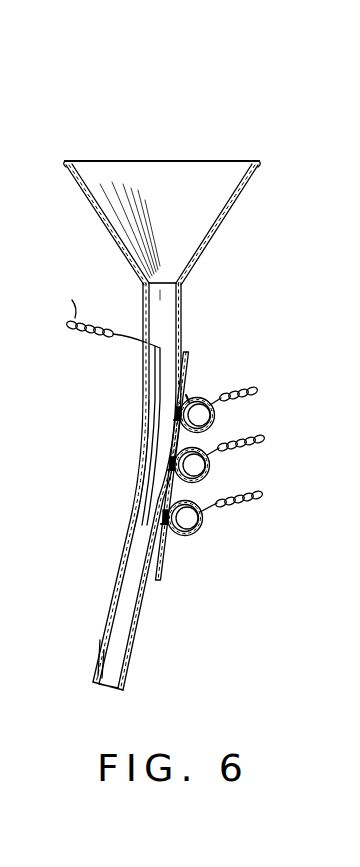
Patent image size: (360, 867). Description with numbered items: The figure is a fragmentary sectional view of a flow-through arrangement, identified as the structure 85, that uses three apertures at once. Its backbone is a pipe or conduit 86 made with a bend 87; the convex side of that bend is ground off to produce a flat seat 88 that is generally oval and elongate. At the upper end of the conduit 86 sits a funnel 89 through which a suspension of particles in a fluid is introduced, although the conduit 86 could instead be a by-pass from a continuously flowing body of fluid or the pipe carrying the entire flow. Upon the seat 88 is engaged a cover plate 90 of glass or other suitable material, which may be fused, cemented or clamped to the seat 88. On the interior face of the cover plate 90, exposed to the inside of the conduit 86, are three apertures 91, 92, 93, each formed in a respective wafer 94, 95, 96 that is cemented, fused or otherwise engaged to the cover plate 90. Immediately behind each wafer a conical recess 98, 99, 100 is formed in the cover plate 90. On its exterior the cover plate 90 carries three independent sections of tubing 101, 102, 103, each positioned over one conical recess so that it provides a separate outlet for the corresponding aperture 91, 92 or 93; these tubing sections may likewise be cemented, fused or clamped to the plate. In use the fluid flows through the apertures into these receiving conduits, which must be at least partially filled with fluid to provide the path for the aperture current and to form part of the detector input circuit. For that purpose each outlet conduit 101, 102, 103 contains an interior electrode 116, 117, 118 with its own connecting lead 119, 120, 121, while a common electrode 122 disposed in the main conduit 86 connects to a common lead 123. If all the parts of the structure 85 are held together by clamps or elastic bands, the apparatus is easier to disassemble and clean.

The structure 85 is at (126, 384).
The pipe or conduit 86 is at (115, 590).
The bend 87 is at (143, 448).
The flat seat 88 is at (186, 398).
The funnel 89 is at (221, 221).
The cover plate 90 is at (184, 392).
The aperture 91 is at (176, 412).
The aperture 92 is at (170, 460).
The aperture 93 is at (163, 515).
The wafer 94 is at (174, 414).
The wafer 95 is at (169, 467).
The wafer 96 is at (160, 520).
The conical recess 98 is at (222, 423).
The conical recess 99 is at (208, 480).
The conical recess 100 is at (190, 536).
The section of tubing 101 is at (205, 398).
The section of tubing 102 is at (208, 466).
The section of tubing 103 is at (203, 532).
The interior electrode 116 is at (214, 411).
The interior electrode 117 is at (211, 473).
The interior electrode 118 is at (202, 527).
The connecting lead 119 is at (257, 391).
The connecting lead 120 is at (264, 441).
The connecting lead 121 is at (263, 497).
The common electrode 122 is at (150, 364).
The common lead 123 is at (91, 312).